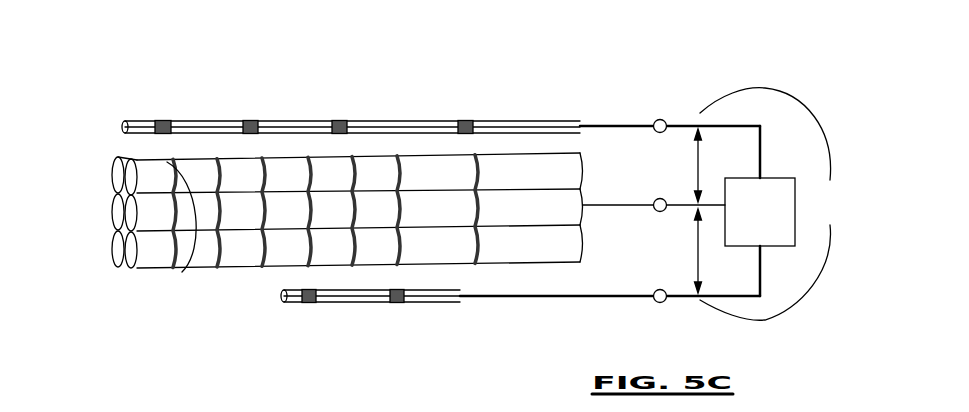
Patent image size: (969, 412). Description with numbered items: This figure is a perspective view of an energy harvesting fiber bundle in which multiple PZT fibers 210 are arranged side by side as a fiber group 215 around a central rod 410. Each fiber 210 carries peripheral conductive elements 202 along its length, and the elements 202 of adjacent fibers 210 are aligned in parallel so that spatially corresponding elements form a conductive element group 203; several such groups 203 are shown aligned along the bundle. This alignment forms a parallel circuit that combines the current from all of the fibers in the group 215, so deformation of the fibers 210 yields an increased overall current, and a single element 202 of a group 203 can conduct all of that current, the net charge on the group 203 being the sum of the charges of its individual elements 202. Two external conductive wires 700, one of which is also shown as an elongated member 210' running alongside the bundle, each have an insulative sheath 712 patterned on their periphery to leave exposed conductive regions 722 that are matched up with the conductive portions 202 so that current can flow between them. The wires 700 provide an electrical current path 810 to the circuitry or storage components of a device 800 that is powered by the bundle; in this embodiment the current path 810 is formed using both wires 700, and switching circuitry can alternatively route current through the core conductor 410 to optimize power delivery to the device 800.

The PZT fiber 210 is at (317, 159).
The elongated tube member 210' is at (316, 119).
The central rod 410 is at (120, 215).
The fiber group 215 is at (128, 252).
The peripheral conductive element 202 is at (258, 266).
The conductive element group 203 is at (183, 263).
The insulative sheath 712 is at (438, 304).
The exposed conductive region 722 is at (340, 121).
The external conductive wire 700 is at (603, 125).
The device 800 is at (760, 212).
The current path 810 is at (766, 204).